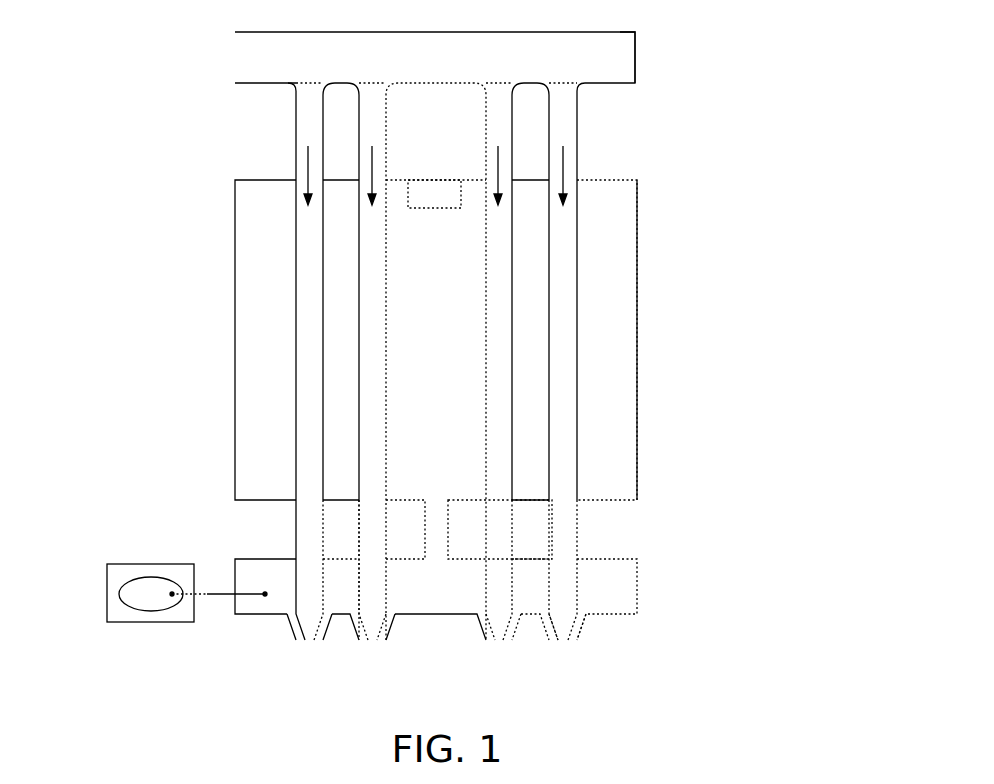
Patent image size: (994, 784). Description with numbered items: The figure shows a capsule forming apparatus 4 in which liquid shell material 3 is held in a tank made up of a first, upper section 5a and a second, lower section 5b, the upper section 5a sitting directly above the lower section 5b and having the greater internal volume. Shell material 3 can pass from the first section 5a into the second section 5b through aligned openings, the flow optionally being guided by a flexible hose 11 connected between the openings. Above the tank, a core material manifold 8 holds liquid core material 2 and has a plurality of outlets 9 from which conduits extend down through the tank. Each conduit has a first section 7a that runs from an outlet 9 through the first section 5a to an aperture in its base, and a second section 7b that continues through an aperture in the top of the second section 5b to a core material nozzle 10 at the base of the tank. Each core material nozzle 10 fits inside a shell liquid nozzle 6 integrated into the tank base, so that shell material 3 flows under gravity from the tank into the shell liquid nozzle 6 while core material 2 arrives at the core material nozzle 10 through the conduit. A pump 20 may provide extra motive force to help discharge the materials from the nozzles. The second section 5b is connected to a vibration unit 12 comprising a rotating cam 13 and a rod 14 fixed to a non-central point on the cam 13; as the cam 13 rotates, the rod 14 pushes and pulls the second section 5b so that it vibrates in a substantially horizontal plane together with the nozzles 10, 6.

The liquid core material 2 is at (429, 71).
The liquid shell material 3 is at (430, 401).
The apparatus 4 is at (187, 135).
The first, upper section 5a is at (637, 358).
The second, lower section 5b is at (637, 577).
The shell liquid nozzle 6 is at (585, 623).
The first section of conduit 7a is at (297, 402).
The second section of conduit 7b is at (297, 525).
The core material manifold 8 is at (635, 65).
The outlet 9 is at (577, 87).
The core material nozzle 10 is at (523, 635).
The flexible hose 11 is at (450, 528).
The vibration unit 12 is at (133, 627).
The cam 13 is at (148, 578).
The rod 14 is at (213, 590).
The pump 20 is at (425, 203).